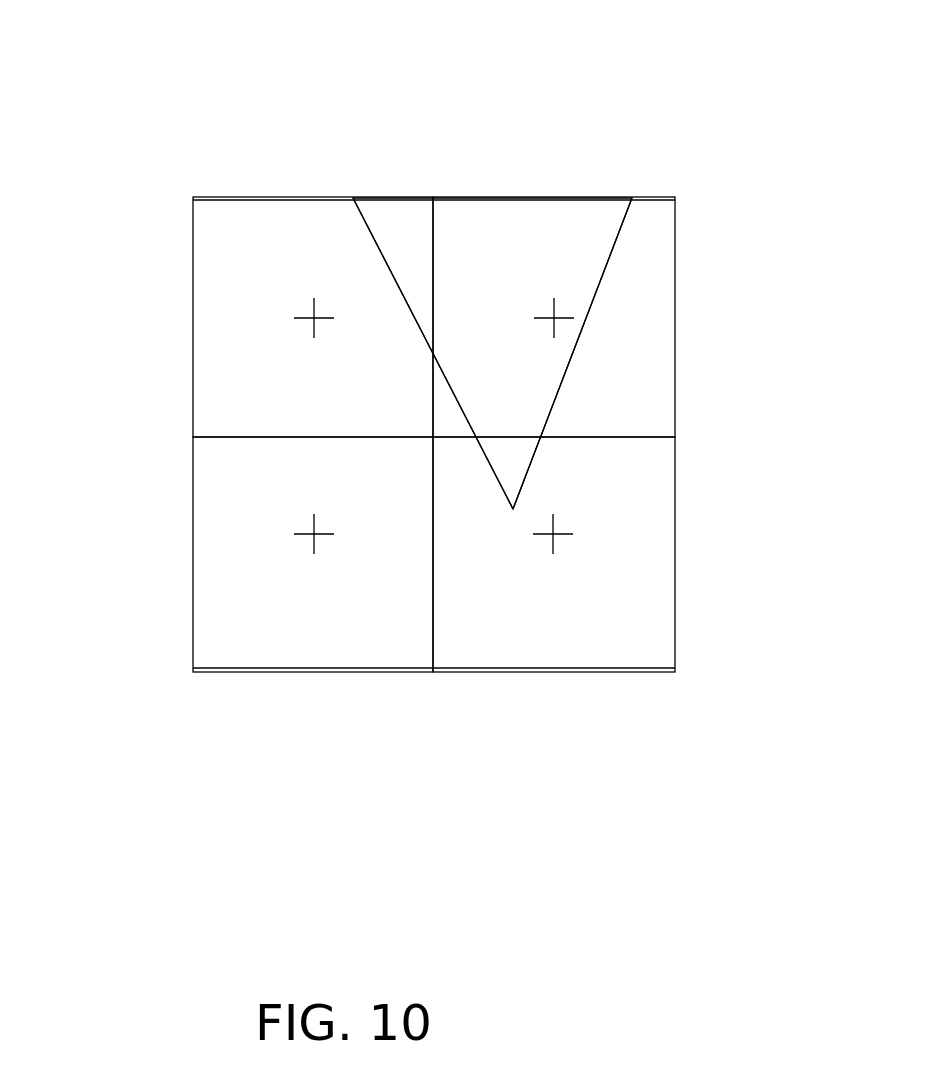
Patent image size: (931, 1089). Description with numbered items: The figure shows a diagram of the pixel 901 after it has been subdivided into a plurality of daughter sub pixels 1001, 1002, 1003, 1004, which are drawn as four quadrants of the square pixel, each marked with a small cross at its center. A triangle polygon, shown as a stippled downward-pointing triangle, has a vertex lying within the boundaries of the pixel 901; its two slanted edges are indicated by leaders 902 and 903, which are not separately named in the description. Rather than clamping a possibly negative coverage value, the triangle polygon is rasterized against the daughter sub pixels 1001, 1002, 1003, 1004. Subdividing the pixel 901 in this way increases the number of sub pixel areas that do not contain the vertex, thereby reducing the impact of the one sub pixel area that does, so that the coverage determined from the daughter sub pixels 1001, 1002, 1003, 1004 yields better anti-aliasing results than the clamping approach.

The pixel 901 is at (553, 225).
The left edge of illuminated region 902 is at (430, 320).
The right edge of illuminated region 903 is at (553, 387).
The sub pixel 1001 is at (193, 357).
The sub pixel 1002 is at (193, 632).
The sub pixel 1003 is at (675, 318).
The sub pixel 1004 is at (675, 633).